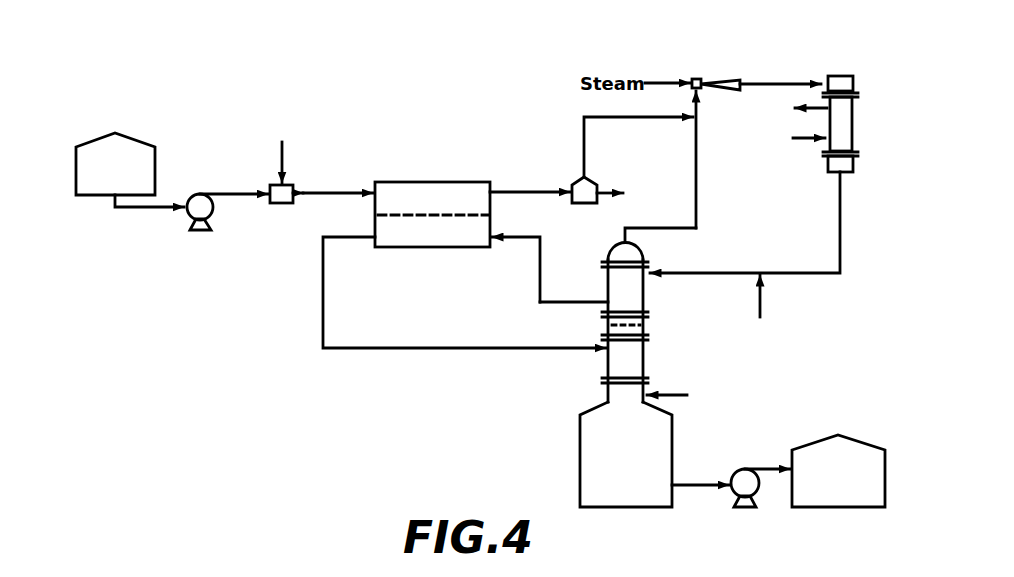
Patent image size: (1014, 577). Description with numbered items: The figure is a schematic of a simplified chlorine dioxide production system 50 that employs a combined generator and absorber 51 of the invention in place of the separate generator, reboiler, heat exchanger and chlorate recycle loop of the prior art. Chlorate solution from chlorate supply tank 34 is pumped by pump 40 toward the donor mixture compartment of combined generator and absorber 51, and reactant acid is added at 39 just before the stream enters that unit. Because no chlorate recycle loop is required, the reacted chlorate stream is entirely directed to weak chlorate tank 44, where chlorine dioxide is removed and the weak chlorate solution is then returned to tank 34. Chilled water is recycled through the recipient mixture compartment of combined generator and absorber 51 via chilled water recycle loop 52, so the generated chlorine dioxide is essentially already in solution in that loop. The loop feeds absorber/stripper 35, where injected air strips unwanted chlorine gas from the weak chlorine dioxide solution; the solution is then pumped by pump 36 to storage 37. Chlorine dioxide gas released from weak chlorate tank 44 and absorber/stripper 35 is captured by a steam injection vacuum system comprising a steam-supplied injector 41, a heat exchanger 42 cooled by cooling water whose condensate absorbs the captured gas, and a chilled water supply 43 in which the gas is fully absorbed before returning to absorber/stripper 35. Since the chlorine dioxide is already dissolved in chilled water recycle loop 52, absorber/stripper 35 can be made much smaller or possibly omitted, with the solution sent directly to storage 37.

The chlorate supply tank 34 is at (112, 139).
The absorber/stripper 35 is at (583, 443).
The pump 36 is at (746, 468).
The storage 37 is at (823, 447).
The acid addition point 39 is at (275, 183).
The pump 40 is at (200, 232).
The injector 41 is at (703, 78).
The heat exchanger 42 is at (851, 80).
The chilled water supply 43 is at (762, 303).
The weak chlorate tank 44 is at (578, 178).
The simplified system 50 is at (201, 83).
The combined generator and absorber 51 is at (420, 186).
The chilled water recycle loop 52 is at (539, 283).